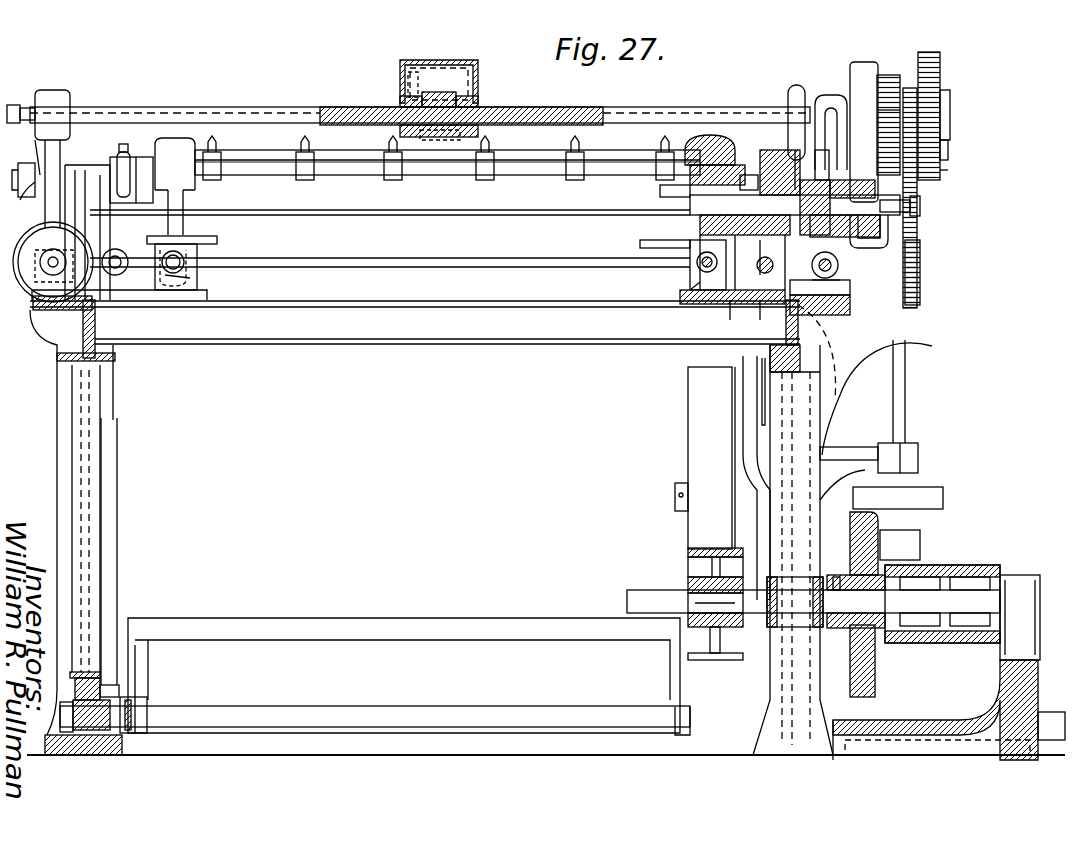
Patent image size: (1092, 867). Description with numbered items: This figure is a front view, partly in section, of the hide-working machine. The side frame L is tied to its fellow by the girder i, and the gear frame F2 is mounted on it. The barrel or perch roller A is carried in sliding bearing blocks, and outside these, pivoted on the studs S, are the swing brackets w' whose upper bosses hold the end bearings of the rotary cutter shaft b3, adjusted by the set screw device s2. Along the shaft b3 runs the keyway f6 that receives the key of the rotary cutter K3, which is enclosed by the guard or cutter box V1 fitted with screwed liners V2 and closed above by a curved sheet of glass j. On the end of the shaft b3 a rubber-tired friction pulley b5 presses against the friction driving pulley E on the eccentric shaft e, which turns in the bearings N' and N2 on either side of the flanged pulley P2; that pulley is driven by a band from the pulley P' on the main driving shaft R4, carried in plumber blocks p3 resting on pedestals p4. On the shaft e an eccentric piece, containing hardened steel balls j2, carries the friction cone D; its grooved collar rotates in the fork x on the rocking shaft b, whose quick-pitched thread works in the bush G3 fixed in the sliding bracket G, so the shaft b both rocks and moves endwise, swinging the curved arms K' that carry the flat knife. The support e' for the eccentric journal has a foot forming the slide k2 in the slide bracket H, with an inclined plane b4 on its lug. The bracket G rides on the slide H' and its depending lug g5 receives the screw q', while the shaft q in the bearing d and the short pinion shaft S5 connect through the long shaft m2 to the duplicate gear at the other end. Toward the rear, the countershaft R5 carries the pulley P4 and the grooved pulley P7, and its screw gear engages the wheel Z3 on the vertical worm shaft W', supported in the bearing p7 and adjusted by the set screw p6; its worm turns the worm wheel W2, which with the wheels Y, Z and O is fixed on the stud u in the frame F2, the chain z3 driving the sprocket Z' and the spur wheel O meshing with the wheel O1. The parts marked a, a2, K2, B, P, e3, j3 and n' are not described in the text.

The rotary cutter shaft b3 is at (86, 110).
The groove or keyway f6 is at (330, 108).
The curved sheet of glass j is at (449, 63).
The bushes or liners V2 is at (400, 101).
The guard or cutter box V1 is at (417, 80).
The rotary cutter K3 is at (445, 93).
The barrel or perch roller A is at (447, 175).
The curved arms K' is at (402, 169).
The clip K2 is at (660, 180).
The rocking shaft b is at (247, 168).
The long shaft m2 is at (390, 238).
The girder i is at (415, 322).
The set screw device s2 is at (28, 107).
The swing brackets w' is at (428, 173).
The studs S is at (19, 199).
The shaft q is at (438, 261).
The slide bracket H is at (408, 237).
The lever a2 is at (117, 162).
The block a is at (131, 180).
The sliding bracket G is at (718, 106).
The slide H' is at (418, 229).
The depending lug g5 is at (166, 256).
The short shaft S5 is at (121, 268).
The screw q' is at (432, 287).
The side frame L is at (60, 440).
The pulley P4 is at (711, 458).
The pulley P7 is at (743, 362).
The countershaft R5 is at (678, 510).
The plumber block p3 is at (708, 660).
The main driving shaft R4 is at (813, 601).
The gear P is at (942, 619).
The driving pulley P' is at (859, 661).
The pedestal or stand p4 is at (1040, 708).
The bearing p7 is at (918, 465).
The screw gear wheel Z3 is at (898, 498).
The set screw adjustment p6 is at (880, 560).
The worm shaft W' is at (913, 391).
The slide k2 is at (875, 380).
The bush G3 is at (717, 147).
The eccentric shaft e is at (795, 200).
The friction cone D is at (772, 165).
The friction driving pulley E is at (795, 165).
The fork x is at (746, 208).
The hardened steel balls j2 is at (813, 207).
The flanged pulley P2 is at (852, 182).
The pin e3 is at (760, 248).
The support e' is at (770, 253).
The rod j3 is at (789, 262).
The bearing d is at (820, 296).
The inclined plane b4 is at (734, 317).
The bracket B is at (675, 198).
The bearing N2 is at (876, 240).
The roller n' is at (837, 265).
The friction pulley b5 is at (794, 107).
The main bearing N' is at (829, 120).
The gear frame F2 is at (864, 117).
The spur wheel Y is at (880, 126).
The worm wheel W2 is at (890, 80).
The chain z3 is at (920, 188).
The spur wheel O1 is at (940, 64).
The stud u is at (954, 115).
The sprocket wheel Z is at (965, 150).
The spur wheel O is at (930, 167).
The sprocket wheel Z' is at (924, 272).